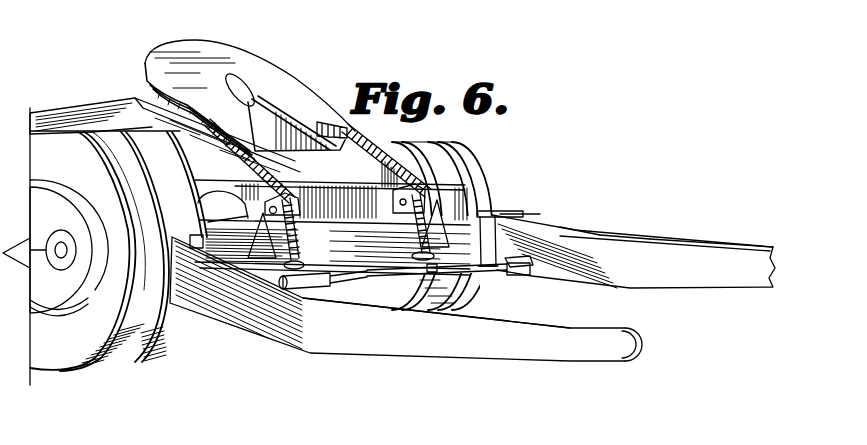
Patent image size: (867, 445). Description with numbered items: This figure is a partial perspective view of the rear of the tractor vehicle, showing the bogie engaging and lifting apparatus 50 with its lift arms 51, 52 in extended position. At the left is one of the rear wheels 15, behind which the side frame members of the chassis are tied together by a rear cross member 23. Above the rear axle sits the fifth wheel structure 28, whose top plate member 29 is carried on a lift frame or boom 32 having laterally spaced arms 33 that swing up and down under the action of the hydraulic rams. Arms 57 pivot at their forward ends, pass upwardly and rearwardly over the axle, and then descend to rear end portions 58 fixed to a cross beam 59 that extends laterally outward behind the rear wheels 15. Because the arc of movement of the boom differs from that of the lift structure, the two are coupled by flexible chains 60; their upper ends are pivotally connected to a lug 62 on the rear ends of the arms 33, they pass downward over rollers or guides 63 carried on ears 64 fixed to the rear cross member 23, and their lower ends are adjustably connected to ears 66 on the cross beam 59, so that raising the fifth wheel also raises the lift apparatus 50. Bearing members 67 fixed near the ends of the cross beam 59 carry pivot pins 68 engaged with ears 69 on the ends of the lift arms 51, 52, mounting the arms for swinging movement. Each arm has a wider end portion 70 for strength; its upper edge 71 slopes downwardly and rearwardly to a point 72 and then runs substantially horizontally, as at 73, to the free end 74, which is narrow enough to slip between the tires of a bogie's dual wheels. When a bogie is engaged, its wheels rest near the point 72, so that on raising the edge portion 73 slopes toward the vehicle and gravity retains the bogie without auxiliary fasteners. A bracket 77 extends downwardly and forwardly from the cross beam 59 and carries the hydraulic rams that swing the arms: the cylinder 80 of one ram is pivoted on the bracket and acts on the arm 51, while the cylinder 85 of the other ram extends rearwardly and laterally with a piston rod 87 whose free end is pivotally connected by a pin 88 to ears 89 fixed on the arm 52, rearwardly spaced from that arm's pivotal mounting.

The rear wheels 15 is at (110, 363).
The rear cross member 23 is at (357, 177).
The fifth wheel structure 28 is at (195, 48).
The top plate member 29 is at (245, 62).
The lift frame or boom 32 is at (109, 96).
The arms 33 is at (58, 117).
The bogie engaging and lifting apparatus 50 is at (247, 342).
The lift arm 51 is at (525, 354).
The lift arm 52 is at (622, 276).
The arms 57 is at (217, 173).
The rear end portions 58 is at (215, 228).
The cross beam 59 is at (342, 237).
The chains 60 is at (245, 145).
The lug 62 is at (340, 125).
The rollers or guides 63 is at (258, 205).
The ears 64 is at (430, 193).
The ears 66 is at (412, 256).
The bearing members 67 is at (520, 227).
The pivot pins 68 is at (493, 211).
The ears 69 is at (507, 214).
The end portions 70 is at (188, 300).
The upper edge 71 is at (572, 231).
The point 72 is at (598, 236).
The edge portion 73 is at (695, 243).
The free end 74 is at (650, 342).
The bracket 77 is at (353, 277).
The cylinder 80 is at (297, 289).
The cylinder 85 is at (404, 275).
The piston rod 87 is at (494, 270).
The pin 88 is at (520, 258).
The ears 89 is at (520, 276).